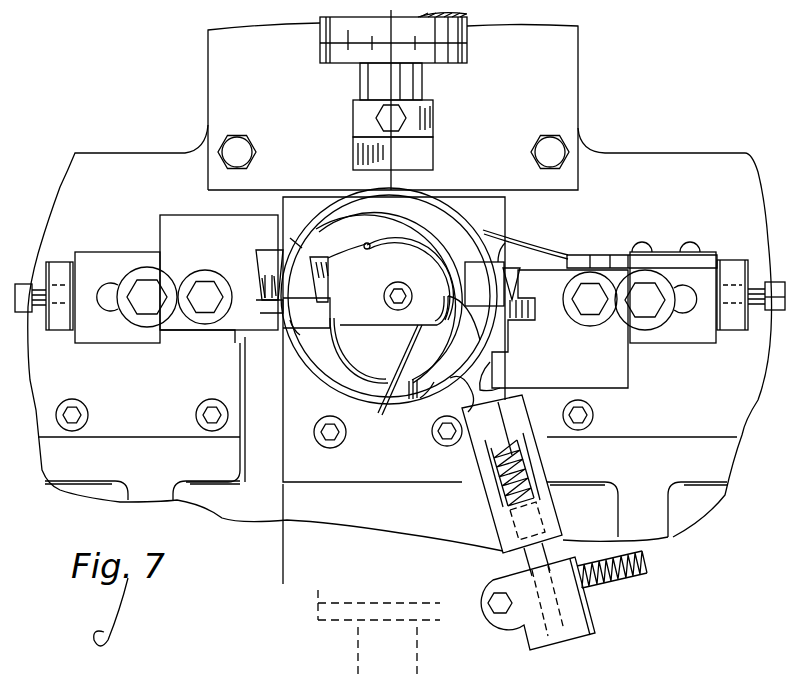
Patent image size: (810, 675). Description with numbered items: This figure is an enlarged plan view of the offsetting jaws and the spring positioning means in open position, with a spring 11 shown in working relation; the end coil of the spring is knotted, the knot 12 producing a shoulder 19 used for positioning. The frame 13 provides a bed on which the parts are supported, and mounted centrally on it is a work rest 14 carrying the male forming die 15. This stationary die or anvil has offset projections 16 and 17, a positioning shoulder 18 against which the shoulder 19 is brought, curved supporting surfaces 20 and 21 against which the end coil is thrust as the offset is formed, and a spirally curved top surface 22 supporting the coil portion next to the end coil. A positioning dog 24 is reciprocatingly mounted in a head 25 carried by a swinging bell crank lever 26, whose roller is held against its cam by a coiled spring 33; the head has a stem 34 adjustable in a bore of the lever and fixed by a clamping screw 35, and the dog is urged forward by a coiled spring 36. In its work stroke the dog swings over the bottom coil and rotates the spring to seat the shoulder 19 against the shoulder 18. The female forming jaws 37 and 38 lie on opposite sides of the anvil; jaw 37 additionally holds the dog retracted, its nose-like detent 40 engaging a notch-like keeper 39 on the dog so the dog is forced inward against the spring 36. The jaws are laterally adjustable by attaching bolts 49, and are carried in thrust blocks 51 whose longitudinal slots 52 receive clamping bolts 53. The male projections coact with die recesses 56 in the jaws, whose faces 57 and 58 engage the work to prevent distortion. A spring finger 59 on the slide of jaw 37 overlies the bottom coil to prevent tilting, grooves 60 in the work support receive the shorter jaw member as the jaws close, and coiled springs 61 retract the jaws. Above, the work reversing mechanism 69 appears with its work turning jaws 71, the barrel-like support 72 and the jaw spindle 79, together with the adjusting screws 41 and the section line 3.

The section line 3 is at (388, 10).
The spring 11 is at (313, 373).
The knot 12 is at (412, 402).
The frame 13 is at (710, 163).
The work rest 14 is at (322, 483).
The male forming die 15 is at (363, 311).
The offset projection 16 is at (319, 267).
The offset projection 17 is at (486, 342).
The positioning shoulder 18 is at (395, 388).
The shoulder 19 is at (428, 400).
The curved supporting surface 20 is at (342, 365).
The curved supporting surface 21 is at (460, 392).
The spirally curved surface 22 is at (417, 230).
The positioning dog 24 is at (490, 450).
The head 25 is at (500, 521).
The bell crank lever 26 is at (533, 637).
The coiled spring 33 is at (620, 577).
The stem 34 is at (530, 557).
The clamping screw 35 is at (500, 607).
The coiled spring 36 is at (540, 470).
The female forming jaw 37 is at (616, 384).
The female forming jaw 38 is at (222, 328).
The keeper 39 is at (514, 428).
The detent 40 is at (490, 379).
The adjusting screw 41 is at (36, 320).
The attaching bolt 49 is at (198, 279).
The thrust block 51 is at (93, 260).
The longitudinal slot 52 is at (110, 290).
The clamping bolt 53 is at (144, 292).
The die recess 56 is at (258, 268).
The jaw face 57 is at (290, 238).
The jaw face 58 is at (277, 312).
The spring finger 59 is at (557, 243).
The groove 60 is at (302, 335).
The coiled spring 61 is at (266, 277).
The work reversing mechanism 69 is at (465, 26).
The work turning jaw 71 is at (427, 147).
The barrel support 72 is at (446, 38).
The jaw spindle 79 is at (413, 84).